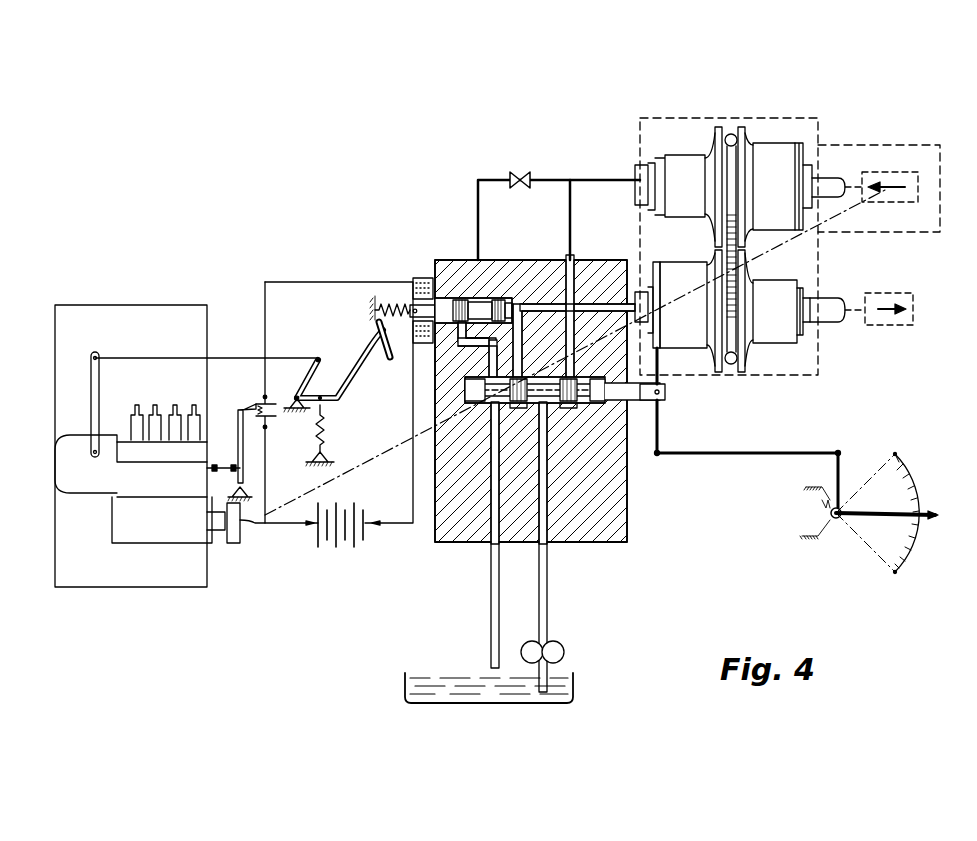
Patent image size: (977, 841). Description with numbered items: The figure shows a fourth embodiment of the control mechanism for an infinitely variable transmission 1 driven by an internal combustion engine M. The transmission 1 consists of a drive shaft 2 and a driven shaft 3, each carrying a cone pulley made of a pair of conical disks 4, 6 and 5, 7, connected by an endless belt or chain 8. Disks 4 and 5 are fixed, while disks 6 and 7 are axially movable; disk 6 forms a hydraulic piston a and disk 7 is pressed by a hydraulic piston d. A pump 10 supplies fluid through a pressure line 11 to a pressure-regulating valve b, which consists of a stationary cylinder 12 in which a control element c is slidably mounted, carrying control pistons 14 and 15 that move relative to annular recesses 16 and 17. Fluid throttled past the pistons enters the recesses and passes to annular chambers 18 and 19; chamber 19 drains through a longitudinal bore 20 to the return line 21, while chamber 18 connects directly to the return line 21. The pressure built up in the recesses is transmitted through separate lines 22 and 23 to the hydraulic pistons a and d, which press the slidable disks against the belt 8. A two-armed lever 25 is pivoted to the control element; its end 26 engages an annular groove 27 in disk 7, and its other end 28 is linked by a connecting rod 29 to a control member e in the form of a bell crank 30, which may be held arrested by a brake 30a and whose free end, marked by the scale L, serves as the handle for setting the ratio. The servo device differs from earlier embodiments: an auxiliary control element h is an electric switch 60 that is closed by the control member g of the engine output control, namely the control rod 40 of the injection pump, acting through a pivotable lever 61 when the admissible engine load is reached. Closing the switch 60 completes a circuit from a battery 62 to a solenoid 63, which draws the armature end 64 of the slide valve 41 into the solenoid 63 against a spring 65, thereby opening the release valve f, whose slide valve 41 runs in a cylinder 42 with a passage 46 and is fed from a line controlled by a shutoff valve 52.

The infinitely variable transmission 1 is at (803, 122).
The drive shaft 2 is at (830, 183).
The driven shaft 3 is at (830, 305).
The conical disk 4 is at (717, 133).
The conical disk 5 is at (742, 373).
The conical disk 6 is at (742, 130).
The conical disk 7 is at (718, 373).
The endless belt or chain 8 is at (730, 133).
The hydraulic piston a is at (775, 154).
The hydraulic piston d is at (689, 338).
The pump 10 is at (553, 648).
The pressure line 11 is at (548, 590).
The stationary cylinder 12 is at (615, 405).
The control piston 14 is at (515, 403).
The control piston 15 is at (566, 403).
The annular recess 16 is at (513, 378).
The annular recess 17 is at (571, 342).
The annular chamber 18 is at (482, 381).
The annular chamber 19 is at (580, 376).
The longitudinal bore 20 is at (537, 403).
The return line 21 is at (489, 590).
The line 22 is at (598, 290).
The line 23 is at (571, 220).
The two-armed lever 25 is at (663, 431).
The end of lever 26 is at (662, 348).
The annular groove 27 is at (658, 264).
The other end of lever 28 is at (656, 458).
The connecting rod 29 is at (742, 452).
The bell crank 30 is at (843, 470).
The brake 30a is at (830, 513).
The control rod 40 is at (224, 470).
The slide valve 41 is at (480, 298).
The cylinder 42 is at (500, 298).
The passage 46 is at (463, 348).
The shutoff valve 52 is at (520, 174).
The electric switch 60 is at (269, 402).
The pivotable lever 61 is at (244, 432).
The battery 62 is at (316, 538).
The solenoid 63 is at (422, 277).
The end of slide valve 64 is at (412, 313).
The spring 65 is at (393, 306).
The pressure-regulating valve b is at (575, 404).
The control element c is at (660, 397).
The control member e is at (875, 512).
The release valve f is at (455, 272).
The control member of output control device g is at (212, 460).
The auxiliary control element h is at (256, 398).
The lever scale L is at (877, 506).
The internal combustion engine M is at (186, 446).